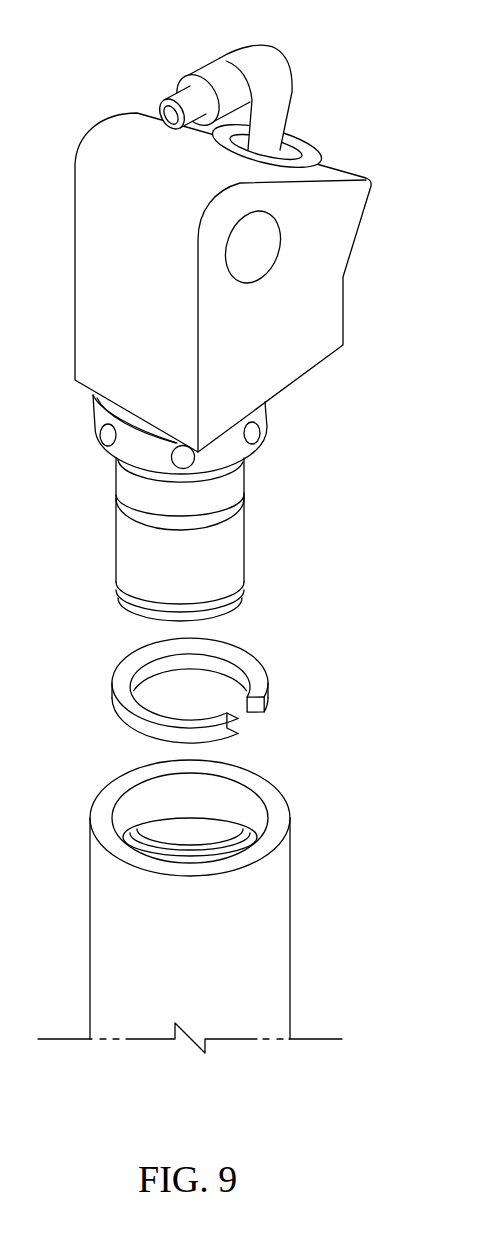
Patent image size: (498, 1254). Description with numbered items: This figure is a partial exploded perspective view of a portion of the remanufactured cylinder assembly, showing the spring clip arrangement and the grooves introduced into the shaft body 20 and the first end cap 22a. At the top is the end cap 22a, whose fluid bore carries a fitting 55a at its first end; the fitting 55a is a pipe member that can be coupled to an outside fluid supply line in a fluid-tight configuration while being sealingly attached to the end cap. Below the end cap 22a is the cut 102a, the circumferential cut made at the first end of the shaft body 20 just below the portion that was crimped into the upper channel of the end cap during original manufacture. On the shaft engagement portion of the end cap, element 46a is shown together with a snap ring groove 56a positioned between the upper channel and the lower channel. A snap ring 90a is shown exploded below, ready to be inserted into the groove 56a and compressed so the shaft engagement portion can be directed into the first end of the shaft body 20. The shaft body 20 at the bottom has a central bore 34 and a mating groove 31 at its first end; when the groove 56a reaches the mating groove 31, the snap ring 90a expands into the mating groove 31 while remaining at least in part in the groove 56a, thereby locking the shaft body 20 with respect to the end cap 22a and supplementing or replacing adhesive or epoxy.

The shaft body 20 is at (191, 894).
The central bore 34 is at (211, 790).
The mating groove 31 is at (201, 852).
The snap ring 90a is at (261, 679).
The cylindrical stem body 46a is at (213, 539).
The snap ring groove 56a is at (245, 493).
The cut 102a is at (264, 428).
The end cap 22a is at (336, 229).
The fitting 55a is at (289, 52).